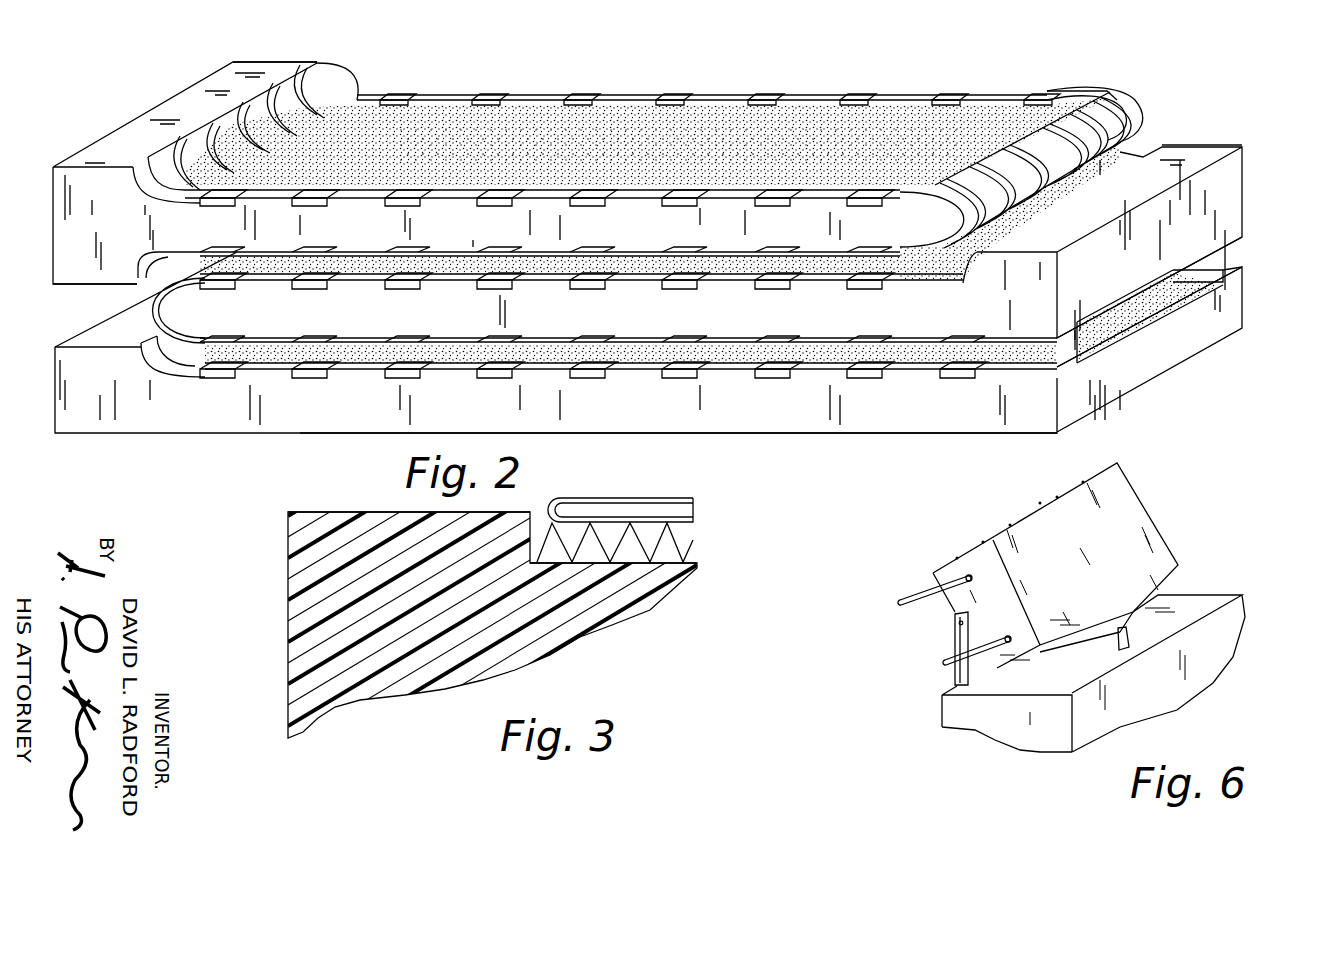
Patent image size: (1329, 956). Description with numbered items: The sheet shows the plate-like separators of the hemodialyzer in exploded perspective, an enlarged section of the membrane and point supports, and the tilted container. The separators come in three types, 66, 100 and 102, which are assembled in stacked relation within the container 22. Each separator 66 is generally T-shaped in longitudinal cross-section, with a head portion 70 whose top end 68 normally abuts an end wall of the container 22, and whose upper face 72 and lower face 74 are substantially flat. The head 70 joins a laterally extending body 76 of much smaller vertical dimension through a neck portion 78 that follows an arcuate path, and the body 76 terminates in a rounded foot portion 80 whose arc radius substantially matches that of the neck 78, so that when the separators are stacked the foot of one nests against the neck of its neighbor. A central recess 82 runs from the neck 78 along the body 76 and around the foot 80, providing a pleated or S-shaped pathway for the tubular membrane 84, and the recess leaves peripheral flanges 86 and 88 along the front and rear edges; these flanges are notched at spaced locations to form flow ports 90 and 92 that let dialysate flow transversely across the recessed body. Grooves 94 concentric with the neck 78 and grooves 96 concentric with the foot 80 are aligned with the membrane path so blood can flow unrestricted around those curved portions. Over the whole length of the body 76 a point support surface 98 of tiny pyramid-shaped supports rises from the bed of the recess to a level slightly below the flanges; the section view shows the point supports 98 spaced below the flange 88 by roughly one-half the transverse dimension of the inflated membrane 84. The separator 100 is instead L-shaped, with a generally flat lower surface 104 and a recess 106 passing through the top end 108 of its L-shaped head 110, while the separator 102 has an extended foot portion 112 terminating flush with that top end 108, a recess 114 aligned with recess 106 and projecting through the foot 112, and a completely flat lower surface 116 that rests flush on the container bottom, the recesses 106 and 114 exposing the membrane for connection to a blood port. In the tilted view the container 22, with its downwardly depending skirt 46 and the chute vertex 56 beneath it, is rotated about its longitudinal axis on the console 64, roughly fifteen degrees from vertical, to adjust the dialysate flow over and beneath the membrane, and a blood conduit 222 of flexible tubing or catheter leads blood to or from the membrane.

In FIG. 6, the container 22 is at (1147, 510).
In FIG. 6, the skirt 46 is at (1005, 668).
In FIG. 6, the vertex 56 is at (1160, 578).
In FIG. 6, the console 64 is at (1226, 669).
In FIG. 2, the separator 66 is at (720, 92).
In FIG. 3, the separator 66 is at (585, 647).
In FIG. 2, the top end 68 is at (97, 140).
In FIG. 2, the head portion 70 is at (190, 78).
In FIG. 2, the upper face 72 is at (148, 128).
In FIG. 2, the lower face 74 is at (75, 287).
In FIG. 2, the body 76 is at (494, 98).
In FIG. 3, the body 76 is at (284, 607).
In FIG. 2, the neck portion 78 is at (347, 72).
In FIG. 2, the foot portion 80 is at (150, 313).
In FIG. 2, the recess 82 is at (297, 72).
In FIG. 3, the tubular membrane 84 is at (697, 500).
In FIG. 2, the peripheral flange 86 is at (460, 88).
In FIG. 2, the peripheral flange 88 is at (466, 202).
In FIG. 3, the peripheral flange 88 is at (372, 512).
In FIG. 2, the flow port 90 is at (583, 95).
In FIG. 2, the flow port 92 is at (600, 201).
In FIG. 2, the grooves 94 is at (270, 105).
In FIG. 2, the grooves 96 is at (1083, 115).
In FIG. 2, the point support surface 98 is at (805, 122).
In FIG. 3, the point support surface 98 is at (695, 553).
In FIG. 2, the separator 100 is at (625, 348).
In FIG. 2, the separator 102 is at (258, 436).
In FIG. 2, the lower surface 104 is at (905, 346).
In FIG. 2, the recess 106 is at (1215, 255).
In FIG. 2, the top end 108 is at (1210, 200).
In FIG. 2, the L-shaped head 110 is at (1193, 143).
In FIG. 2, the foot portion 112 is at (1120, 378).
In FIG. 2, the recess 114 is at (1195, 300).
In FIG. 2, the lower surface 116 is at (947, 432).
In FIG. 6, the blood conduit 222 is at (920, 600).